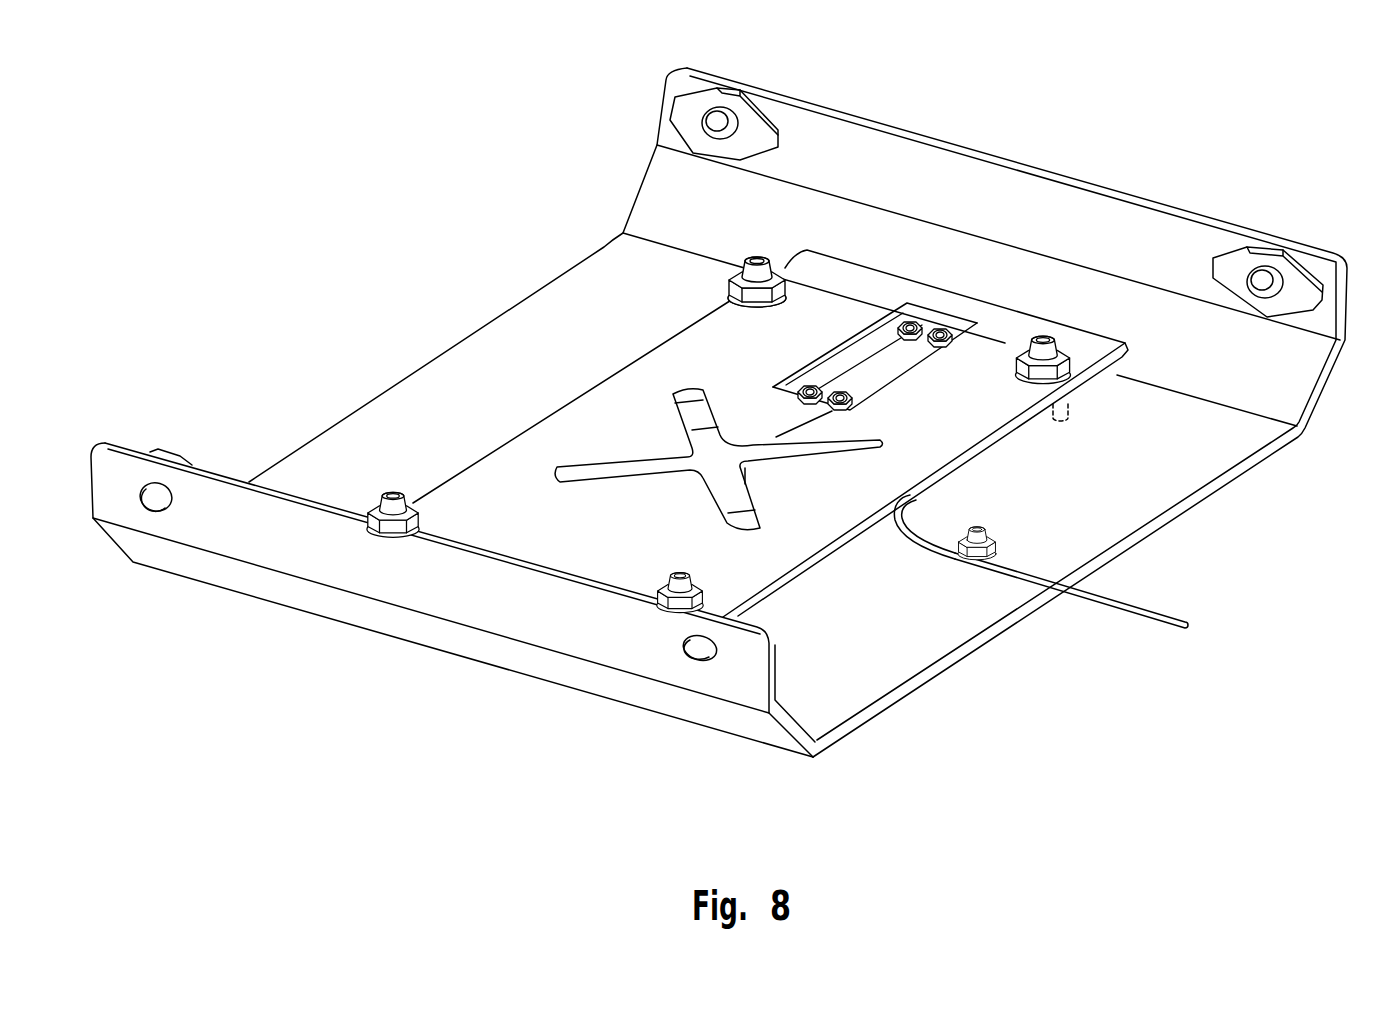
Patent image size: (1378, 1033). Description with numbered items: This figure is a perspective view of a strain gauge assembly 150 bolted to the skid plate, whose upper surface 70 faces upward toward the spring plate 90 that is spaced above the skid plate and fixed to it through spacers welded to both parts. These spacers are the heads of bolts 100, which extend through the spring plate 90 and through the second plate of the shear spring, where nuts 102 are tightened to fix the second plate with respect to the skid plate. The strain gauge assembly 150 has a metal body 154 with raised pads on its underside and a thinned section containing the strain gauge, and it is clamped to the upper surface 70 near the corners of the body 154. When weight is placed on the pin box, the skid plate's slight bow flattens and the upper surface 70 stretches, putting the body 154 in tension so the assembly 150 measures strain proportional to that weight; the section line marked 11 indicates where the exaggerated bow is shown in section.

The upper surface 70 is at (1143, 484).
The spring plate 90 is at (733, 557).
The bolts 100 is at (757, 256).
The nuts 102 is at (731, 284).
The strain gauge assembly 150 is at (878, 340).
The metal body 154 is at (857, 377).
The section line 11- 11 is at (958, 323).